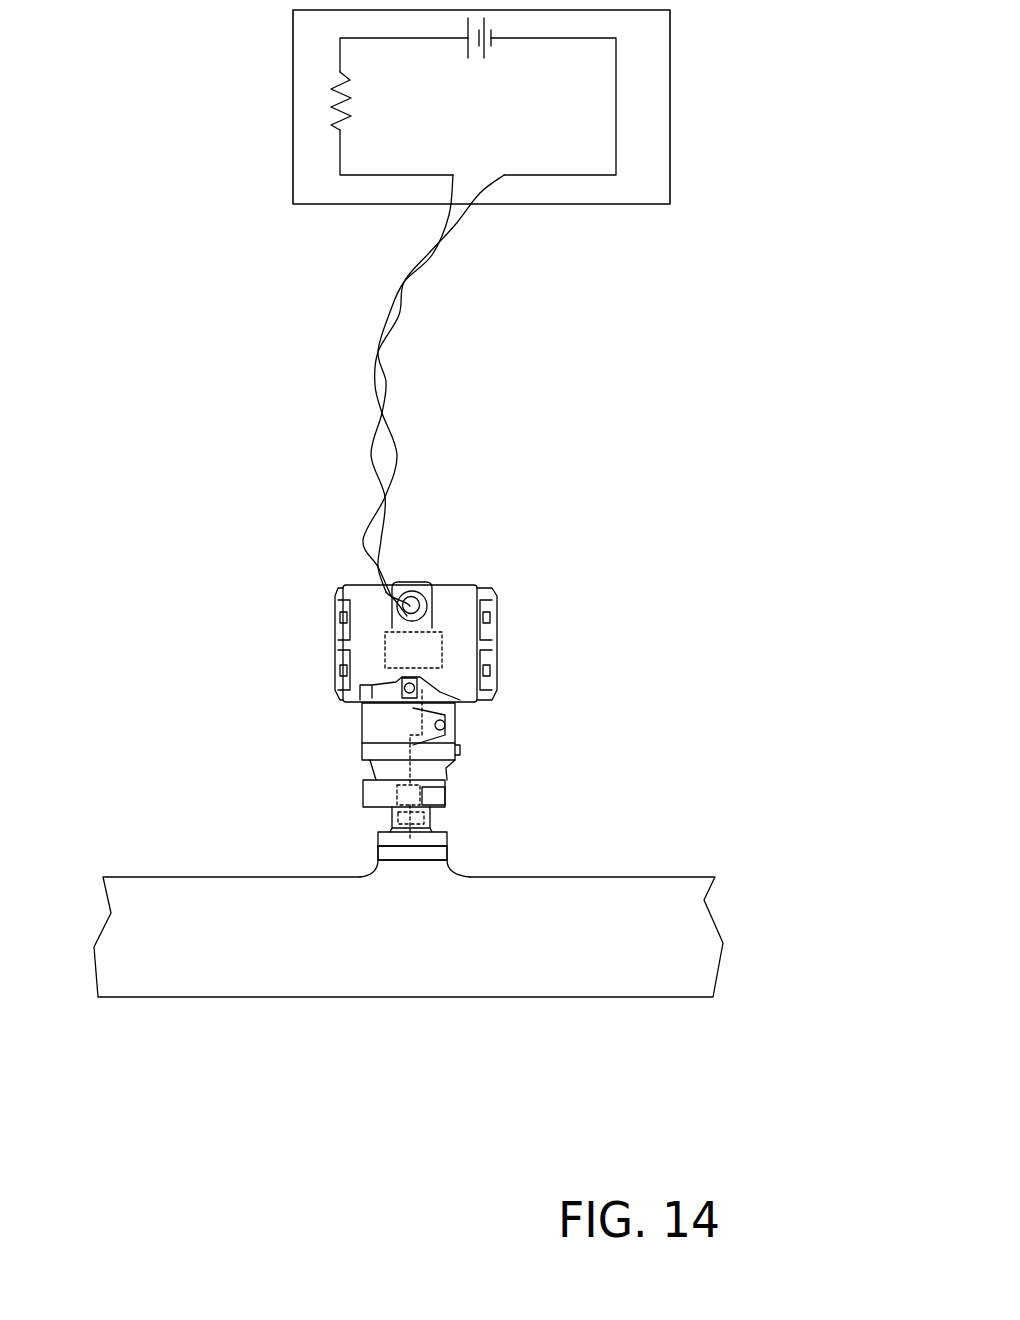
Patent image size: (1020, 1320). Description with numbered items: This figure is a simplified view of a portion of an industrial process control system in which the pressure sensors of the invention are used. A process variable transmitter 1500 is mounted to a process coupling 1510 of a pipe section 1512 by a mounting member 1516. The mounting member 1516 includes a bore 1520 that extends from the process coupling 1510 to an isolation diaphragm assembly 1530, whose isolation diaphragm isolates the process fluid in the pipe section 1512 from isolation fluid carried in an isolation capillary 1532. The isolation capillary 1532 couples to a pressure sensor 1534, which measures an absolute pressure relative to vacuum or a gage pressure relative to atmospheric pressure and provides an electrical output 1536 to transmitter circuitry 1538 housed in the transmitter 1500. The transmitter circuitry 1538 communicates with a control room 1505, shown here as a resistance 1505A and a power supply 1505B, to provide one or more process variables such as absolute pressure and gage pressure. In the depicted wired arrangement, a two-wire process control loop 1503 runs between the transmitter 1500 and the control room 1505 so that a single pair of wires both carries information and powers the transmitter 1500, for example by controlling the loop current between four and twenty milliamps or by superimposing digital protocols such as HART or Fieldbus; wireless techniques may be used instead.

The process variable transmitter 1500 is at (508, 570).
The two-wire process control loop 1503 is at (423, 267).
The control room 1505 is at (672, 143).
The resistance 1505A is at (335, 103).
The power supply 1505B is at (468, 58).
The process coupling 1510 is at (385, 855).
The pipe section 1512 is at (170, 888).
The mounting member 1516 is at (447, 838).
The bore 1520 is at (407, 837).
The isolation diaphragm assembly 1530 is at (430, 823).
The isolation capillary 1532 is at (443, 800).
The pressure sensor 1534 is at (413, 789).
The electrical output 1536 is at (493, 693).
The transmitter circuitry 1538 is at (437, 637).